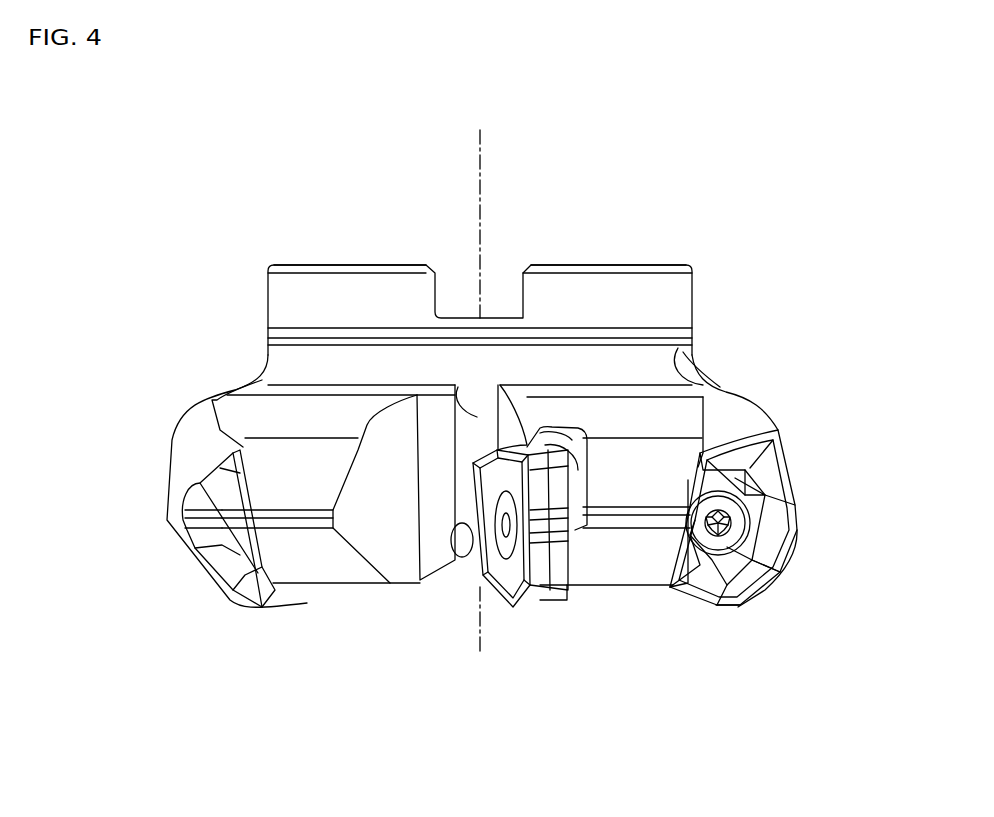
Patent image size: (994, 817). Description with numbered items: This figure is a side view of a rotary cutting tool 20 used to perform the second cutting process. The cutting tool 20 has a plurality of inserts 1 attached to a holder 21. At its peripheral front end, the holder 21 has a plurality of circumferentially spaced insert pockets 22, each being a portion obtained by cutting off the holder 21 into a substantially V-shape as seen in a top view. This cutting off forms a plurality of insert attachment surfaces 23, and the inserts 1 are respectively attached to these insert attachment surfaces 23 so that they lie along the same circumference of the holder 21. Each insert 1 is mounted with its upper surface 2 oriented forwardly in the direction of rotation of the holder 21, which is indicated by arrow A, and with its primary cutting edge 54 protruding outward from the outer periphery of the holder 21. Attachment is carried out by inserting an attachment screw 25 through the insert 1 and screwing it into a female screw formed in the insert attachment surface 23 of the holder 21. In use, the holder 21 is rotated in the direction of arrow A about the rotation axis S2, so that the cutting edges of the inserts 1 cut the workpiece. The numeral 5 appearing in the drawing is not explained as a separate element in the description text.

The insert 1 is at (242, 612).
The upper surface 2 is at (735, 478).
The side surface of cutting insert 5 is at (716, 605).
The cutting tool 20 is at (698, 265).
The holder 21 is at (315, 303).
The insert pocket 22 is at (460, 388).
The insert attachment surface 23 is at (543, 423).
The attachment screw 25 is at (727, 547).
The primary cutting edge 54 is at (752, 560).
The rotation axis S2 is at (478, 230).
The arrow A is at (405, 180).